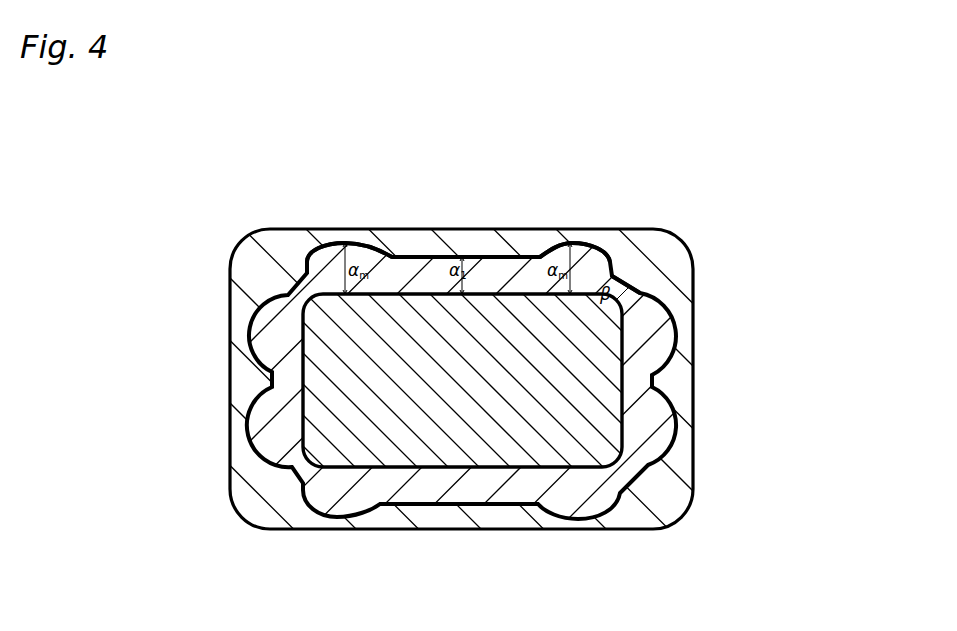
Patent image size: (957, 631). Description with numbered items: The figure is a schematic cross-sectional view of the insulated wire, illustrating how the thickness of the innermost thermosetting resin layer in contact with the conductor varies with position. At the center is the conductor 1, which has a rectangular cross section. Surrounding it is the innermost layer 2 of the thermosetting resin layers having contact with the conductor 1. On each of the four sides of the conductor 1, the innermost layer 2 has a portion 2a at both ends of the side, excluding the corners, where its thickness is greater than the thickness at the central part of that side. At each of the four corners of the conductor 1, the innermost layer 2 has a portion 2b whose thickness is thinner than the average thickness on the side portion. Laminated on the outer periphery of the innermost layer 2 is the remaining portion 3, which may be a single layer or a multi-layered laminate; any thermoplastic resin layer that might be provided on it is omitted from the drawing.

The conductor 1 is at (598, 380).
The innermost layer 2 is at (480, 483).
The thick portion 2a is at (345, 243).
The thin portion 2b is at (625, 287).
The remaining portion 3 is at (462, 242).